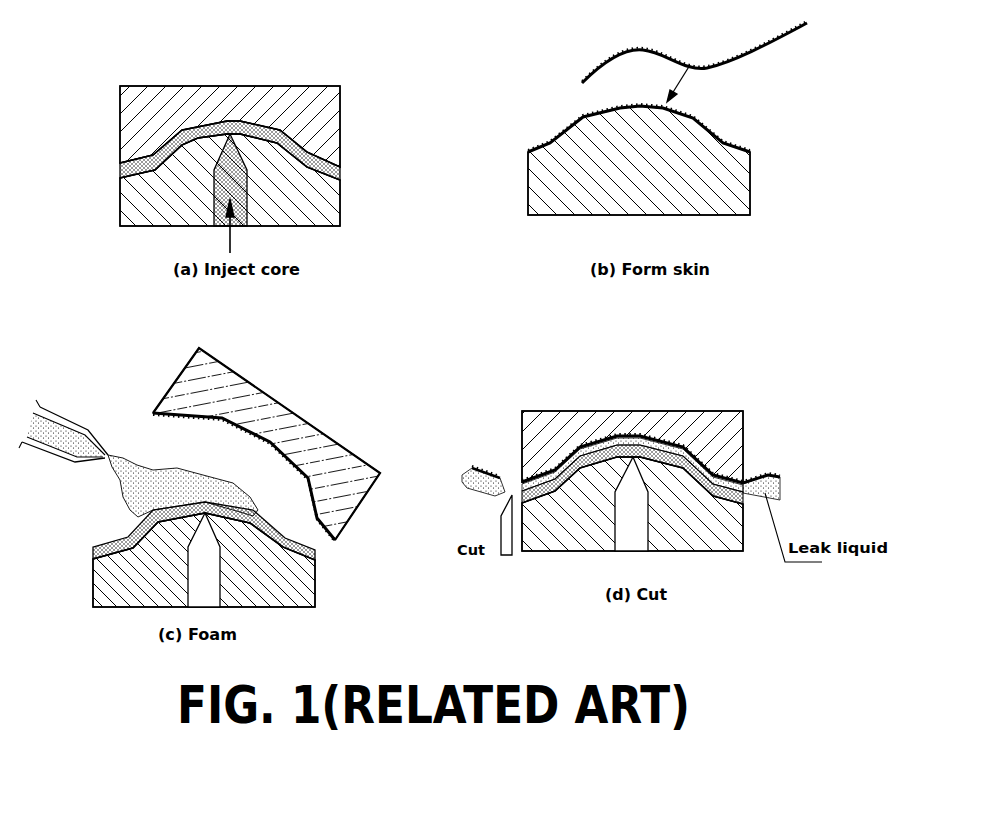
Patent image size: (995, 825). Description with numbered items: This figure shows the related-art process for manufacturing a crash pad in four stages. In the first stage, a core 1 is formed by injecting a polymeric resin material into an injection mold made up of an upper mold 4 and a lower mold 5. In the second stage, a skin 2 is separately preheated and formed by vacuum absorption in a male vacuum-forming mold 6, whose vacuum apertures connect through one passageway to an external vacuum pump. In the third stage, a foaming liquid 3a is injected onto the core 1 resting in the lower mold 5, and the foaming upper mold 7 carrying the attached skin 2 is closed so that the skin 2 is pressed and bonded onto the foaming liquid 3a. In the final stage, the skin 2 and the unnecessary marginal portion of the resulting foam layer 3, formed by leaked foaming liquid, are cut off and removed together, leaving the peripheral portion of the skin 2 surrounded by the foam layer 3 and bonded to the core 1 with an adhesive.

The core 1 is at (240, 130).
The skin 2 is at (607, 63).
The foam layer 3 is at (668, 443).
The foaming liquid 3a is at (130, 490).
The upper mold 4 is at (130, 133).
The lower mold 5 is at (137, 208).
The vacuum-forming mold 6 is at (730, 180).
The foaming upper mold 7 is at (183, 387).